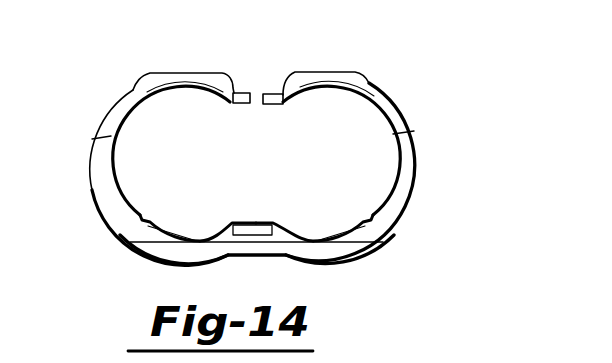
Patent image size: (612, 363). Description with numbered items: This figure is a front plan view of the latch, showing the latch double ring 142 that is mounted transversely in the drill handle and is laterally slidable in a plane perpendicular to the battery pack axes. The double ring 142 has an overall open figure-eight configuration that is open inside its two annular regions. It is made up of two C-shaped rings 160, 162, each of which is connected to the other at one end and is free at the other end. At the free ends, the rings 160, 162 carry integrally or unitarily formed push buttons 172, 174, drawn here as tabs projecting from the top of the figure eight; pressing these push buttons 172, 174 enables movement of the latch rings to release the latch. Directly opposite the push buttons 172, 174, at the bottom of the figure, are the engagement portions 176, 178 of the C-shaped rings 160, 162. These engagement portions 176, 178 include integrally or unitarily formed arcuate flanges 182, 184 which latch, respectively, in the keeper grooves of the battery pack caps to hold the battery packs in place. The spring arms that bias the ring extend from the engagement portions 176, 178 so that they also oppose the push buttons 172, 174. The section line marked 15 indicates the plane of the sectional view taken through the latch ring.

The clip body 142 is at (409, 99).
The first clip half 160 is at (99, 154).
The second clip half 162 is at (415, 160).
The first tab 172 is at (173, 80).
The second tab 174 is at (325, 80).
The first bottom wall 176 is at (168, 255).
The second bottom wall 178 is at (334, 250).
The first inner ledge 182 is at (163, 229).
The second inner ledge 184 is at (332, 240).
The section line for FIG. 15 is at (43, 167).